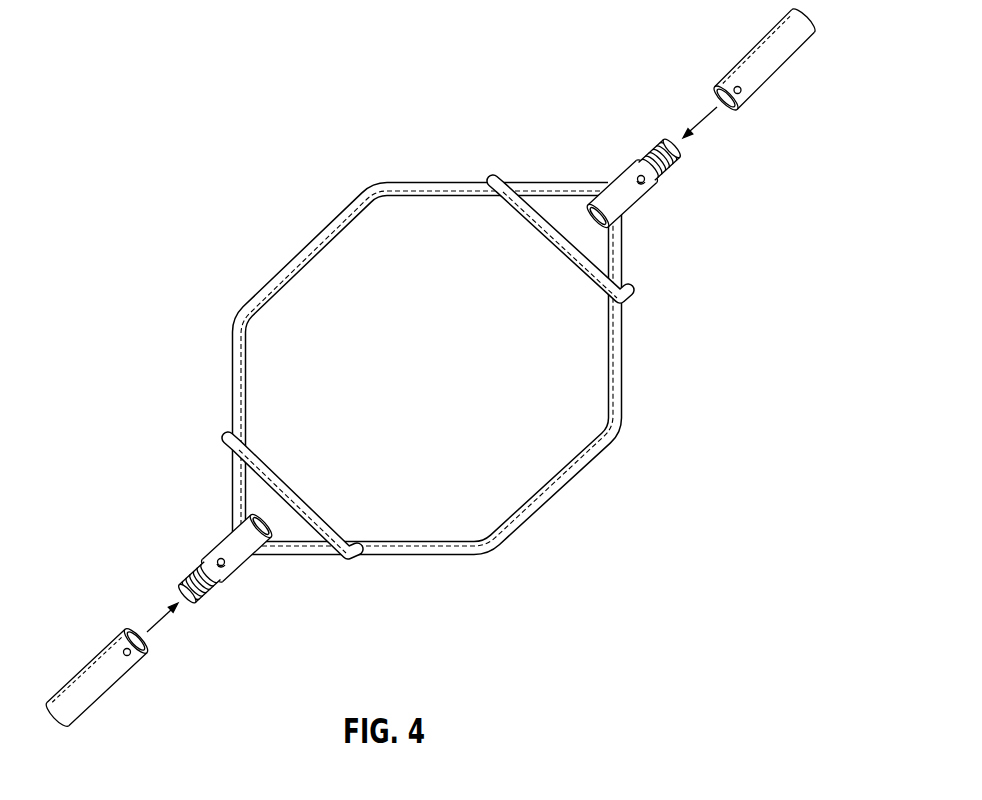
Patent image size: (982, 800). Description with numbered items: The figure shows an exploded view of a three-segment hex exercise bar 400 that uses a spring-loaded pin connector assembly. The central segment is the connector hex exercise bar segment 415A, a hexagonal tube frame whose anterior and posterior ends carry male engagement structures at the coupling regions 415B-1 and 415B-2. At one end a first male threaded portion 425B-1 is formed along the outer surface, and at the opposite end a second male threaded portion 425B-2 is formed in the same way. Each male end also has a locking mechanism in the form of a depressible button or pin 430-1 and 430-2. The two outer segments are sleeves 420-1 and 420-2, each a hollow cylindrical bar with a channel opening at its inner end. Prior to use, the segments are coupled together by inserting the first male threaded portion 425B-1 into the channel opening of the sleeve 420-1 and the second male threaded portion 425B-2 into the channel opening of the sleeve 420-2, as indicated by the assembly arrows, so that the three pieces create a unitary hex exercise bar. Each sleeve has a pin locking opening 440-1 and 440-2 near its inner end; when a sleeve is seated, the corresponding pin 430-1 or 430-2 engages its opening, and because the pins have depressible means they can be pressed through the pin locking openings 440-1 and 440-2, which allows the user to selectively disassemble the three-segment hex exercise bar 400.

The three-segment hex exercise bar 400 is at (428, 394).
The connector hex exercise bar segment 415A is at (450, 545).
The first coupling sleeve 415B-1 is at (220, 550).
The second coupling sleeve 415B-2 is at (615, 193).
The first male threaded portion 425B-1 is at (185, 580).
The second male threaded portion 425B-2 is at (660, 141).
The pin 430-1 is at (226, 570).
The pin 430-2 is at (643, 190).
The sleeve 420-1 is at (93, 708).
The sleeve 420-2 is at (778, 78).
The pin locking opening 440-1 is at (124, 649).
The pin locking opening 440-2 is at (734, 86).